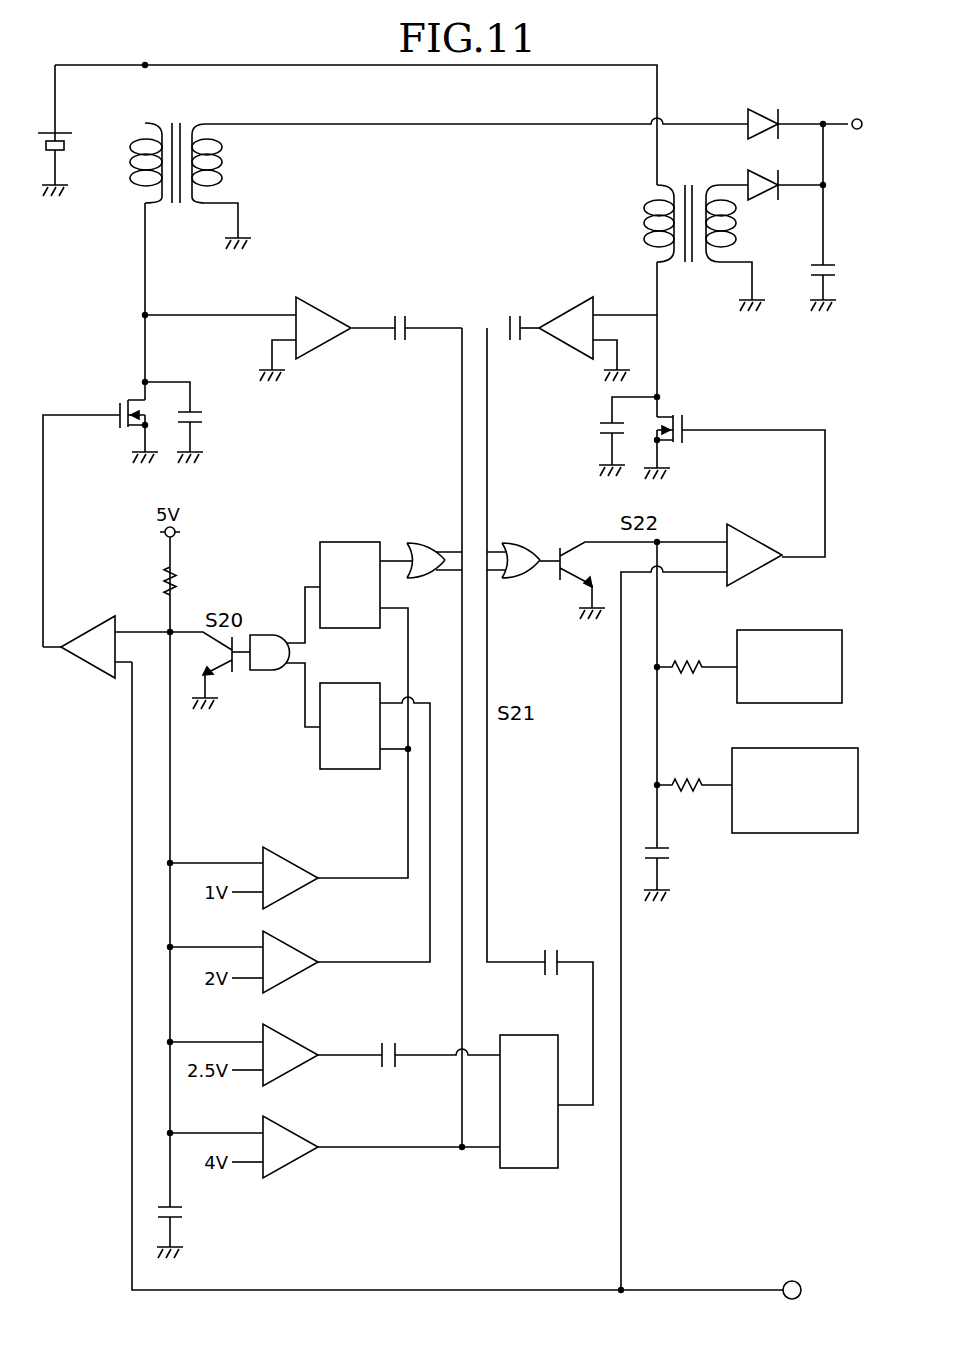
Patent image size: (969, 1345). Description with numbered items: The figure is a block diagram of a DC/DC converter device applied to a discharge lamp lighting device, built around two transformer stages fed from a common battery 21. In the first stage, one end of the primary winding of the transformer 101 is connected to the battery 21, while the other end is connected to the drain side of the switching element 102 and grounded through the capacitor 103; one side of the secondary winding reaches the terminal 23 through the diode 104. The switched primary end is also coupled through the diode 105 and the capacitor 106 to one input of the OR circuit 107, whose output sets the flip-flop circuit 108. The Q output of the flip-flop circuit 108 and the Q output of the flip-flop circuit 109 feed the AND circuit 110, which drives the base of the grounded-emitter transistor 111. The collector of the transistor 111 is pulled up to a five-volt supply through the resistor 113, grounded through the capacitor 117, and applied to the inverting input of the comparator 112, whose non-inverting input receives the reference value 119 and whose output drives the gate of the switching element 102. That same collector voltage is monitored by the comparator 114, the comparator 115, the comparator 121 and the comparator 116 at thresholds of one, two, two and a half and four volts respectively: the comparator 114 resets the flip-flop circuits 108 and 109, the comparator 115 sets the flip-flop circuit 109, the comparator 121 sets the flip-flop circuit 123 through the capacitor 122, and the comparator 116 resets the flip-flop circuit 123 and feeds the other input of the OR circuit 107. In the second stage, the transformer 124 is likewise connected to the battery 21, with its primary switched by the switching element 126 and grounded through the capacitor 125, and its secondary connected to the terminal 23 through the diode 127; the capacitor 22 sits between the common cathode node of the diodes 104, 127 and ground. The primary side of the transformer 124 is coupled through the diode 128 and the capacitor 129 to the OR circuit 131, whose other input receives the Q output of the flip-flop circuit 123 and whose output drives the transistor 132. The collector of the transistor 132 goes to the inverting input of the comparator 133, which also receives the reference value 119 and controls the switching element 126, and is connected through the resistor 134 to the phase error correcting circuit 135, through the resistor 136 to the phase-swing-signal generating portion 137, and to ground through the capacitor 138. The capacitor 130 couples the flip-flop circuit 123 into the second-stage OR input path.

The battery 21 is at (75, 147).
The capacitor 22 is at (840, 270).
The terminal 23 is at (857, 116).
The transformer 101 is at (176, 122).
The switching element 102 is at (116, 410).
The capacitor 103 is at (204, 415).
The diode 104 is at (766, 116).
The diode 105 is at (323, 308).
The capacitor 106 is at (400, 310).
The OR circuit 107 is at (418, 546).
The flip-flop circuit 108 is at (358, 546).
The flip-flop circuit 109 is at (358, 687).
The AND circuit 110 is at (283, 636).
The transistor 111 is at (226, 672).
The comparator 112 is at (80, 633).
The resistor 113 is at (156, 581).
The comparator 114 is at (290, 857).
The comparator 115 is at (290, 940).
The comparator 116 is at (290, 1124).
The capacitor 117 is at (183, 1212).
The reference value for control 119 is at (793, 1280).
The comparator 121 is at (290, 1034).
The capacitor 122 is at (388, 1036).
The flip-flop circuit 123 is at (530, 1034).
The transformer 124 is at (688, 180).
The capacitor 125 is at (598, 433).
The switching element 126 is at (688, 416).
The diode 127 is at (766, 203).
The diode 128 is at (573, 306).
The capacitor 129 is at (515, 310).
The capacitor 130 is at (550, 946).
The OR circuit 131 is at (520, 546).
The transistor 132 is at (568, 544).
The comparator 133 is at (752, 536).
The resistor 134 is at (690, 664).
The phase error correcting circuit 135 is at (818, 628).
The resistor 136 is at (690, 782).
The phase-swing-signal generating portion 137 is at (818, 748).
The capacitor 138 is at (672, 855).